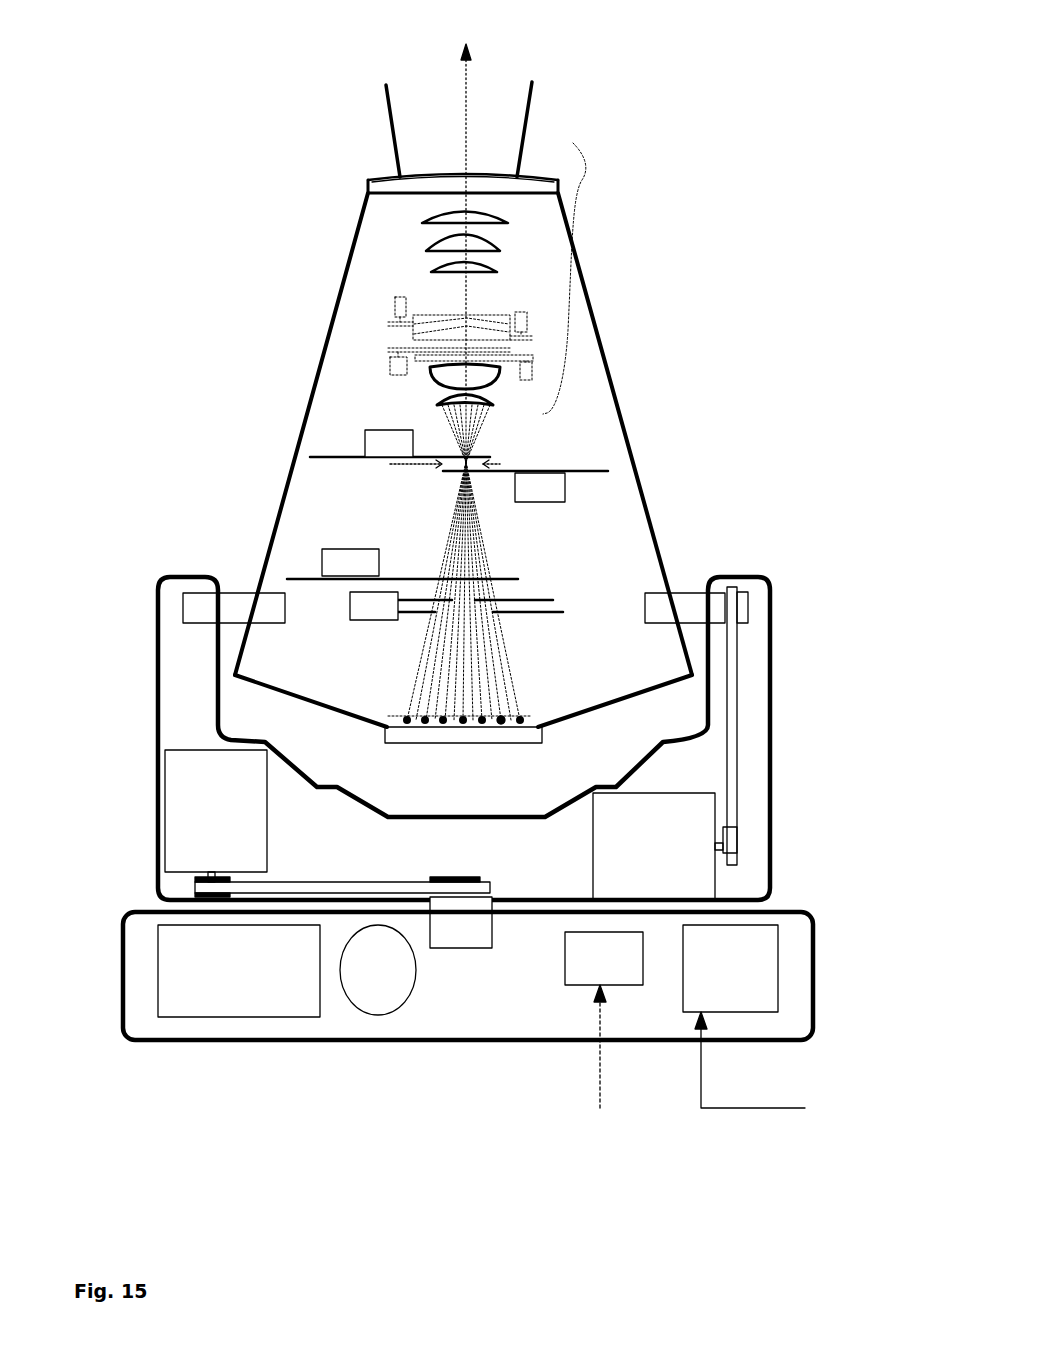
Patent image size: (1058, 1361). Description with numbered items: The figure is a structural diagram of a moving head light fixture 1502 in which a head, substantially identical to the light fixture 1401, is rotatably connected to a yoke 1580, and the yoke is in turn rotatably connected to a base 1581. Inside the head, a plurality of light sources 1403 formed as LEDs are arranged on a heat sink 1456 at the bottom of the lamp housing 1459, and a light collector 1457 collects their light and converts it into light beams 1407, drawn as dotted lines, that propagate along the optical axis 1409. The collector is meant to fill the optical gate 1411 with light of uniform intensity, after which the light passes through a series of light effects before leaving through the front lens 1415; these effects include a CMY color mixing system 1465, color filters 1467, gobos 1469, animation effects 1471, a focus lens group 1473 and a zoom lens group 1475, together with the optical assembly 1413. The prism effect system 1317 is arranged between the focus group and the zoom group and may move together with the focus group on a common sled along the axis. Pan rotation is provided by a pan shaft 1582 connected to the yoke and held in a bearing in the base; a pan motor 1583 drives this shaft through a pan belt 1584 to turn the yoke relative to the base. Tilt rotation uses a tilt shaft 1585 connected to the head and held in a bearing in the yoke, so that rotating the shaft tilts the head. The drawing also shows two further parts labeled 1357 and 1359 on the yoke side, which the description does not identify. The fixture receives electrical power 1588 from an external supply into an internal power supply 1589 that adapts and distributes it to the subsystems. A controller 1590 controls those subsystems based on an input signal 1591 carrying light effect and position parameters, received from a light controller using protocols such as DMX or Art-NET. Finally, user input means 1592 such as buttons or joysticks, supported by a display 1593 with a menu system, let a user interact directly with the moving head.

The moving head light fixture 1502 is at (746, 54).
The optical axis 1409 is at (473, 92).
The light fixture 1401 is at (649, 231).
The lamp housing 1459 is at (610, 368).
The front lens 1415 is at (372, 182).
The optical assembly 1413 is at (595, 278).
The zoom lens group 1475 is at (410, 217).
The prism effect system 1317 is at (350, 331).
The focus lens group 1473 is at (425, 399).
The light beams 1407 is at (460, 535).
The animation effects 1471 is at (400, 449).
The optical gate 1411 is at (548, 456).
The gobos 1469 is at (525, 486).
The color filters 1467 is at (402, 564).
The CMY color mixing system 1465 is at (456, 606).
The yoke 1580 is at (158, 633).
The tilt shaft 1585 is at (454, 608).
The actuator rod 1359 is at (733, 715).
The actuator 1357 is at (654, 846).
The pan motor 1583 is at (216, 816).
The light sources 1403 is at (457, 728).
The light collector 1457 is at (528, 718).
The heat sink 1456 is at (513, 728).
The pan belt 1584 is at (340, 887).
The pan shaft 1582 is at (461, 922).
The base 1581 is at (283, 1040).
The display 1593 is at (239, 971).
The user input means 1592 is at (378, 970).
The controller 1590 is at (604, 958).
The internal power supply 1589 is at (730, 968).
The input signal 1591 is at (570, 1048).
The electrical power 1588 is at (750, 1060).